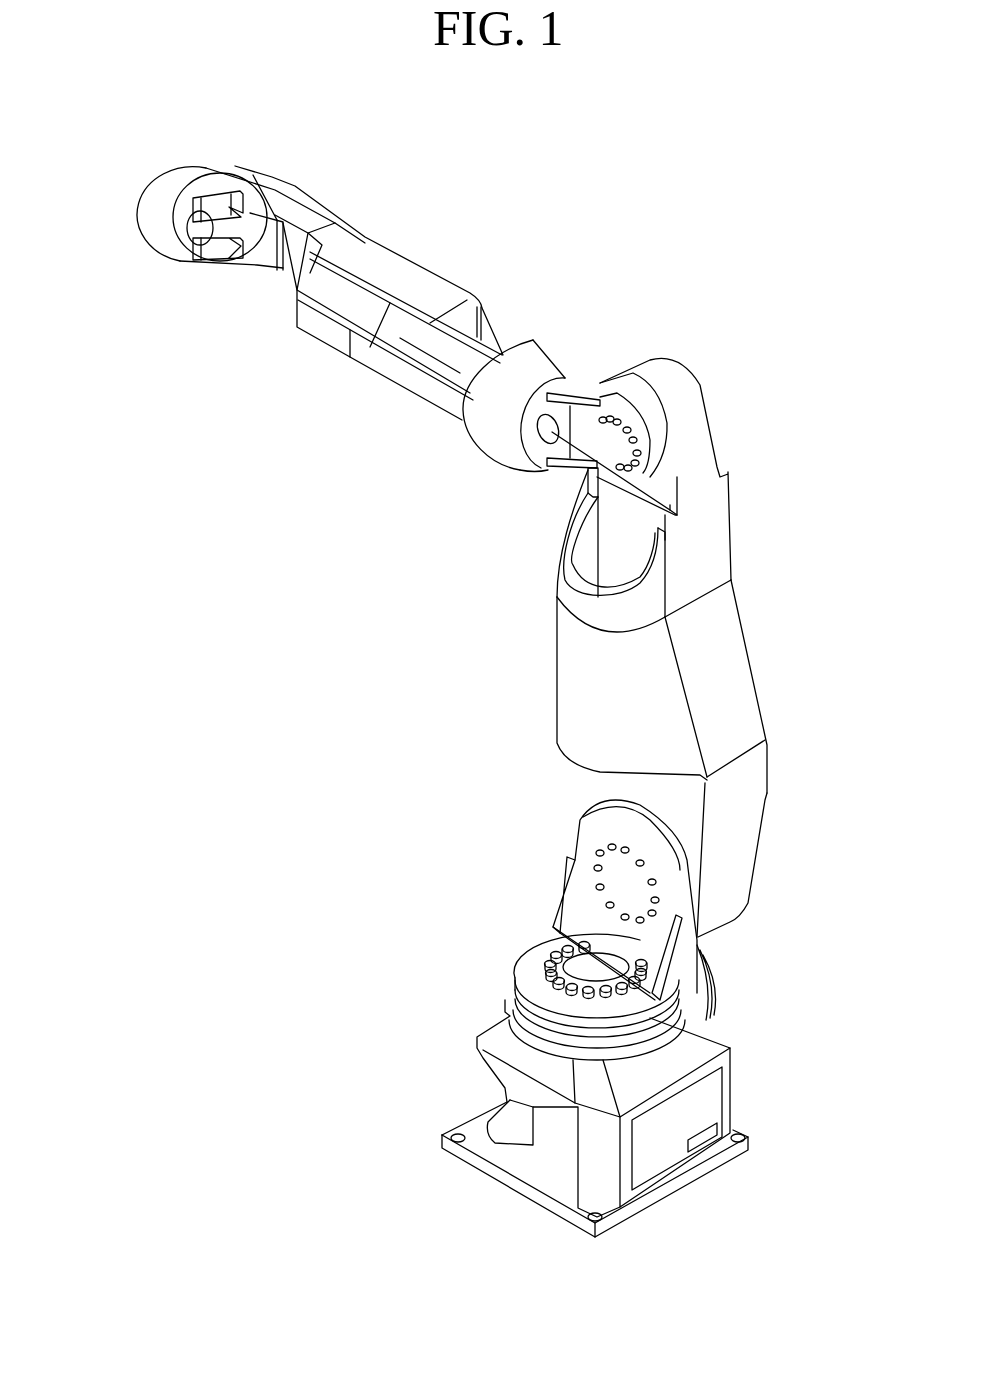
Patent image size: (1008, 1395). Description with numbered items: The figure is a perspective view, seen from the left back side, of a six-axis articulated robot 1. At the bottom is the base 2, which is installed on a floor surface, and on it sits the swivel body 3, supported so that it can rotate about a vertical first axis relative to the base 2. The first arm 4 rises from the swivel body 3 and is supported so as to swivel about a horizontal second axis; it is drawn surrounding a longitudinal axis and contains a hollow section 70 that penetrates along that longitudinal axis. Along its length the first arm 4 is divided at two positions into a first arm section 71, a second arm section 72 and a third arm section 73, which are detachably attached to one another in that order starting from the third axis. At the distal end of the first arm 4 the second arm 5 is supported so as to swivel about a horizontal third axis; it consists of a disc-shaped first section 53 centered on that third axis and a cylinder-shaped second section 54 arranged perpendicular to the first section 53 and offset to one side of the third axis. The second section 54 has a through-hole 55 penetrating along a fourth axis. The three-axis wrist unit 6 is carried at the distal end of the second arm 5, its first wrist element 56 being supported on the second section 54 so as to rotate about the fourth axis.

The robot 1 is at (752, 208).
The base 2 is at (645, 1193).
The swivel body 3 is at (688, 969).
The first arm 4 is at (750, 714).
The second arm 5 is at (487, 440).
The wrist unit 6 is at (153, 203).
The first section 53 is at (593, 447).
The second section 54 is at (518, 372).
The through-hole 55 is at (525, 465).
The first wrist element 56 is at (354, 293).
The hollow section 70 is at (583, 565).
The first arm section 71 is at (713, 520).
The second arm section 72 is at (730, 668).
The third arm section 73 is at (735, 882).